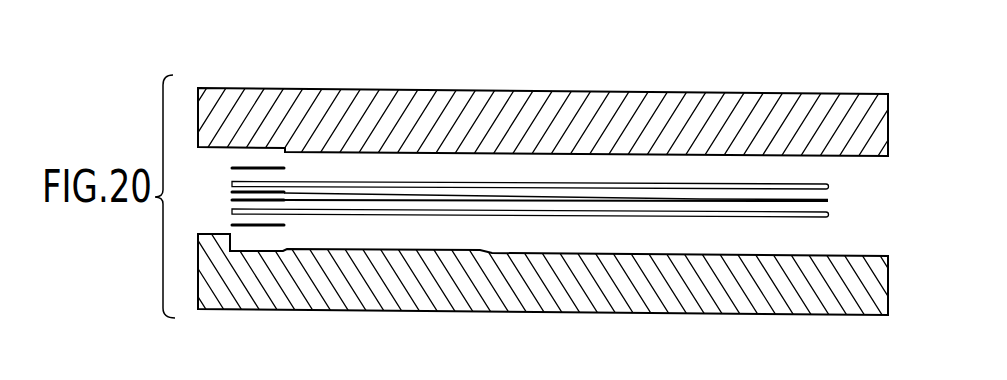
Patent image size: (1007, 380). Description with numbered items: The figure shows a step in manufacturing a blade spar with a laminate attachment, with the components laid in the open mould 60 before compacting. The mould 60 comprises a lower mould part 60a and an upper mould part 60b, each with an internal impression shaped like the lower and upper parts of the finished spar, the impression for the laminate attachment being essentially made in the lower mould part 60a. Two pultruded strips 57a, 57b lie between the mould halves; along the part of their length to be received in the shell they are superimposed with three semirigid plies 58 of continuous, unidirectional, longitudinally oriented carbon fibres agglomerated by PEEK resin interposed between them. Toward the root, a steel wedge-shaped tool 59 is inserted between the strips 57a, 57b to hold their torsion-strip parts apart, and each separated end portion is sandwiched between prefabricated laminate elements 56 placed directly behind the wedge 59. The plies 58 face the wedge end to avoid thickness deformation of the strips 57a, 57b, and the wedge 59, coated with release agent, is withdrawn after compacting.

The prefabricated laminate elements 56 is at (232, 225).
The pultruded strip 57a is at (570, 214).
The pultruded strip 57b is at (563, 186).
The plies of unidirectional carbon fibres 58 is at (682, 201).
The steel wedge-shaped tool 59 is at (313, 197).
The mould 60 is at (209, 80).
The lower mould part 60a is at (255, 277).
The upper mould part 60b is at (270, 110).